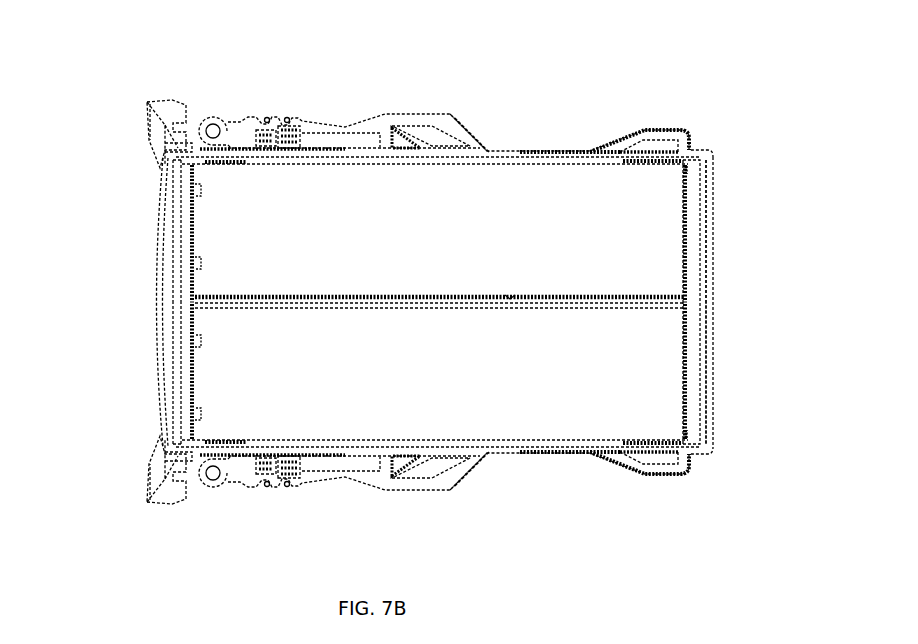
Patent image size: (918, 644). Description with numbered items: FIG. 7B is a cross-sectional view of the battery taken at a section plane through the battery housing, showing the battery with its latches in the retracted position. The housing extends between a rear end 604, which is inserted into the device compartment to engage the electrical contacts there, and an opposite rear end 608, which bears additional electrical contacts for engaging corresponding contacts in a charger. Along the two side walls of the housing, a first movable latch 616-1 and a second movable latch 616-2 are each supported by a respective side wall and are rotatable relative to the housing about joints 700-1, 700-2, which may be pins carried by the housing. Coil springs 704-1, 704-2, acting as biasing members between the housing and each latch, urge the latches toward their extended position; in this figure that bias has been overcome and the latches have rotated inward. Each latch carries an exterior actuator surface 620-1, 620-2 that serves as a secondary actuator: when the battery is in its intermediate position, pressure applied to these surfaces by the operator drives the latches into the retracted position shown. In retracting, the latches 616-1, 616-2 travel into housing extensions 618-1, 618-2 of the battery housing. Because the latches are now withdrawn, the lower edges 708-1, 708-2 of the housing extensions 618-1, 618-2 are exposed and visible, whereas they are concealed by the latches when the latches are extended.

The rear end 604 is at (703, 312).
The rear end 608 is at (162, 263).
The movable latch 616-1 is at (322, 130).
The movable latch 616-2 is at (322, 478).
The housing extension 618-1 is at (466, 130).
The housing extension 618-2 is at (453, 483).
The actuator surface 620-1 is at (287, 130).
The actuator surface 620-2 is at (283, 482).
The joint 700-1 is at (213, 128).
The joint 700-2 is at (213, 478).
The coil spring 704-1 is at (290, 142).
The coil spring 704-2 is at (290, 460).
The lower edge 708-1 is at (418, 113).
The lower edge 708-2 is at (413, 492).